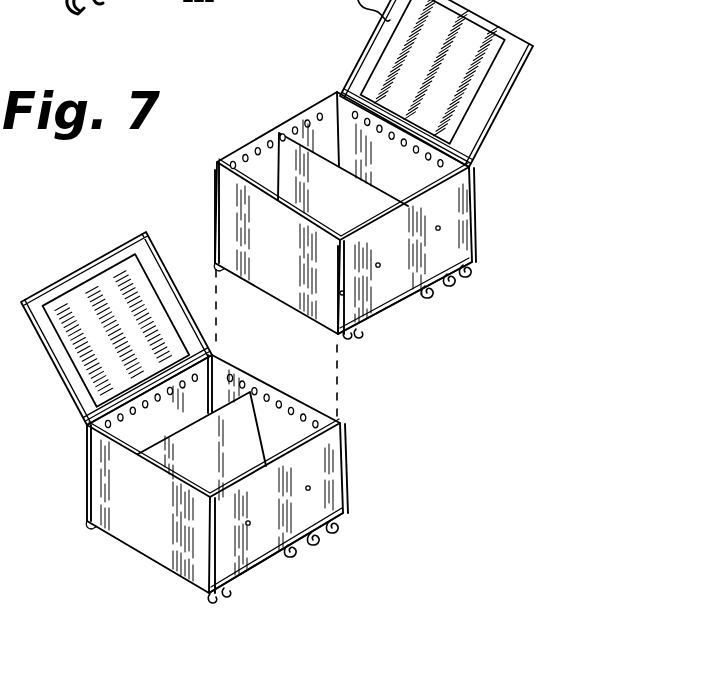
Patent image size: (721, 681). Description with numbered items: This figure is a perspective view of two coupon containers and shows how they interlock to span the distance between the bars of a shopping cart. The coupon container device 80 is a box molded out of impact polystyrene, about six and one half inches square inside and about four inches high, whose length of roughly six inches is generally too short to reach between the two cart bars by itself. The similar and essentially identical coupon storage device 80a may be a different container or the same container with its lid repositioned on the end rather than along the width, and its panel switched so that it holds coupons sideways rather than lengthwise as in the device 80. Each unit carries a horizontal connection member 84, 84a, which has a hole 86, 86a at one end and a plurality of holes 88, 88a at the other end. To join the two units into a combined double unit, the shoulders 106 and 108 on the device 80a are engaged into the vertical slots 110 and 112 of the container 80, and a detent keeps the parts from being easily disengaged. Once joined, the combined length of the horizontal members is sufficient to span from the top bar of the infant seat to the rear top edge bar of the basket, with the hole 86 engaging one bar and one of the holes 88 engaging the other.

The coupon container device 80 is at (153, 522).
The coupon storage device 80a is at (452, 237).
The horizontal connection member 84 is at (276, 563).
The horizontal connection member 84a is at (399, 306).
The hole 86 is at (232, 596).
The hole 86a is at (356, 338).
The holes 88 is at (332, 551).
The holes 88a is at (466, 274).
The shoulder 106 is at (334, 321).
The shoulder 108 is at (216, 190).
The vertical slot 110 is at (338, 407).
The vertical slot 112 is at (214, 354).